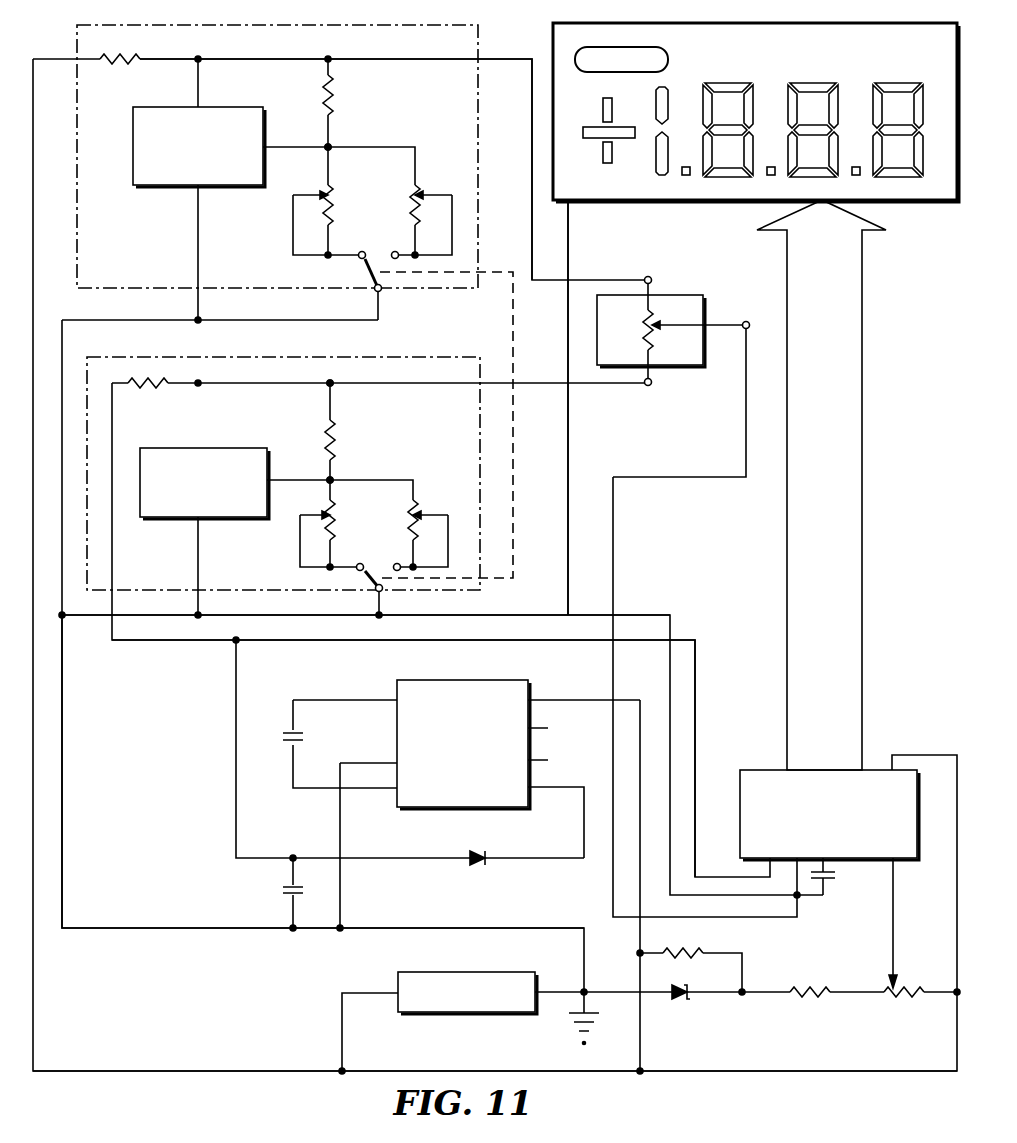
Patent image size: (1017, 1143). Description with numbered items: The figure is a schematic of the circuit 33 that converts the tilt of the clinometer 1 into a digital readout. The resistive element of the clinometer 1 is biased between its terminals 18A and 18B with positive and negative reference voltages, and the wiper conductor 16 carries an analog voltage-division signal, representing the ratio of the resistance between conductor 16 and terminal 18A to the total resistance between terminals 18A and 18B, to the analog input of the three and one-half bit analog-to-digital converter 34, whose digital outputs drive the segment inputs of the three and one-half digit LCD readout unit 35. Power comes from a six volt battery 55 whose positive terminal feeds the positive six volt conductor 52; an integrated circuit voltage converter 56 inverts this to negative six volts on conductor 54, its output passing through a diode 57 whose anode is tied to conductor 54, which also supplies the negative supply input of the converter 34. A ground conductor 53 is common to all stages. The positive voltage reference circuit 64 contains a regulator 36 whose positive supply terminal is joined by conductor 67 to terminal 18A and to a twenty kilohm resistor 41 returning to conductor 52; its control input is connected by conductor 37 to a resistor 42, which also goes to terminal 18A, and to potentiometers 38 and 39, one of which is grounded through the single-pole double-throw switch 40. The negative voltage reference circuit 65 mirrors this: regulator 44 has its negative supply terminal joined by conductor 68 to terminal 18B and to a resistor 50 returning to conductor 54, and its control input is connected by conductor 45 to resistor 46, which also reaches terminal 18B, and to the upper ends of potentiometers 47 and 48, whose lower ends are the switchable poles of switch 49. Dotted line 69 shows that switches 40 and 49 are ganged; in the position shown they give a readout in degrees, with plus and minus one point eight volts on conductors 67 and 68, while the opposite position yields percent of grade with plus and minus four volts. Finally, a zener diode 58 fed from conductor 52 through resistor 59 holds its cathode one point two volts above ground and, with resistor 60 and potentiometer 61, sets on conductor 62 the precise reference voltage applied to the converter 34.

The clinometer 1 is at (678, 283).
The conductor 16 is at (743, 333).
The terminal 18A is at (643, 277).
The terminal 18B is at (643, 389).
The circuit 33 is at (112, 1080).
The analog-to-digital converter 34 is at (797, 770).
The LCD readout unit 35 is at (905, 201).
The voltage regulator circuit 36 is at (245, 107).
The conductor 37 is at (330, 145).
The potentiometer 38 is at (332, 194).
The potentiometer 39 is at (412, 188).
The switch 40 is at (370, 253).
The resistor 41 is at (110, 62).
The resistor 42 is at (334, 86).
The regulator 44 is at (243, 448).
The conductor 45 is at (333, 477).
The resistor 46 is at (333, 427).
The potentiometer 47 is at (334, 510).
The potentiometer 48 is at (408, 504).
The switch 49 is at (372, 548).
The resistor 50 is at (152, 393).
The positive six volt conductor 52 is at (919, 754).
The ground conductor 53 is at (568, 511).
The negative six volt conductor 54 is at (160, 642).
The battery 55 is at (424, 972).
The voltage converter 56 is at (482, 680).
The diode 57 is at (478, 865).
The zener diode 58 is at (686, 1002).
The resistor 59 is at (696, 965).
The resistor 60 is at (818, 1002).
The potentiometer 61 is at (908, 1002).
The conductor 62 is at (890, 942).
The positive voltage reference circuit 64 is at (76, 42).
The negative voltage reference circuit 65 is at (115, 357).
The conductor 67 is at (487, 58).
The conductor 68 is at (335, 385).
The dotted line 69 is at (513, 340).